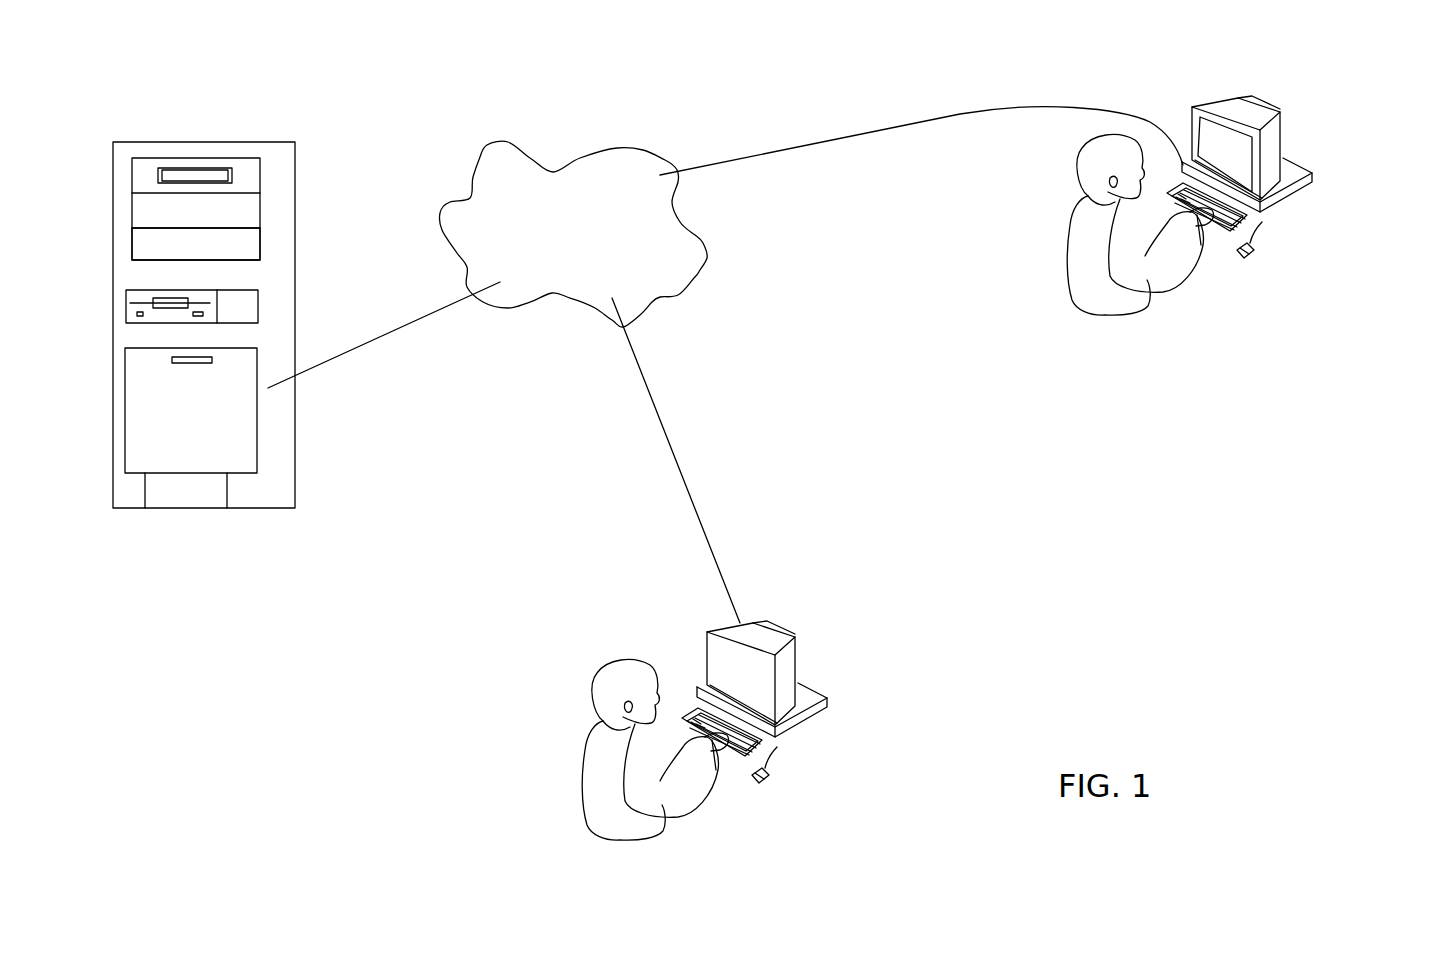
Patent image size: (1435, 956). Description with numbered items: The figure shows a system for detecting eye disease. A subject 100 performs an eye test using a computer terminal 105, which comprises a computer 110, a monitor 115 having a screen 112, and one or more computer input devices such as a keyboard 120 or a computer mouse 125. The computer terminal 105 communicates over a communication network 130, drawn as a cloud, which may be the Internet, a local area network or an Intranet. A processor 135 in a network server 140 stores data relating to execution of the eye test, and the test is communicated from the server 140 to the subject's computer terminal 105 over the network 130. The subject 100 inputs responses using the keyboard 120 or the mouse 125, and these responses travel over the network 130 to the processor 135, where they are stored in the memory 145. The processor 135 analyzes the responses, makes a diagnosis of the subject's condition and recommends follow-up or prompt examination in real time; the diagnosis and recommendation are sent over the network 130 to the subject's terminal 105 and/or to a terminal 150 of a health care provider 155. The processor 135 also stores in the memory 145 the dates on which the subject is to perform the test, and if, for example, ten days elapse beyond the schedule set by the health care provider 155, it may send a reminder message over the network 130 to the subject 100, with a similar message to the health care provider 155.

The subject 100 is at (1088, 268).
The computer terminal 105 is at (1205, 184).
The computer 110 is at (1290, 190).
The screen 112 is at (1208, 146).
The monitor 115 is at (1279, 121).
The keyboard 120 is at (1253, 222).
The computer mouse 125 is at (1248, 252).
The communication network 130 is at (685, 272).
The processor 135 is at (243, 215).
The network server 140 is at (276, 325).
The memory 145 is at (242, 248).
The terminal 150 is at (718, 706).
The health care provider 155 is at (610, 773).